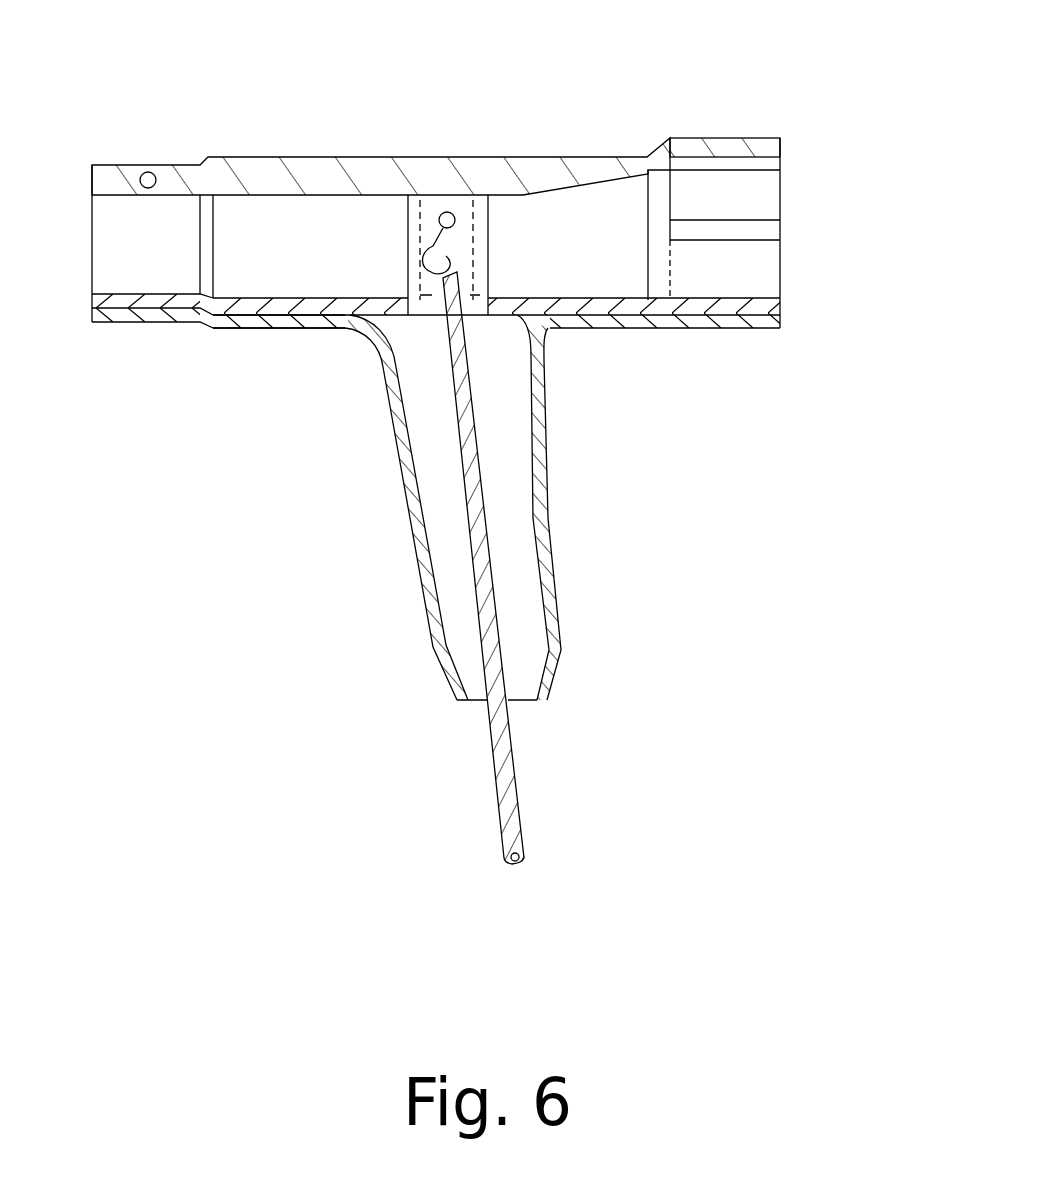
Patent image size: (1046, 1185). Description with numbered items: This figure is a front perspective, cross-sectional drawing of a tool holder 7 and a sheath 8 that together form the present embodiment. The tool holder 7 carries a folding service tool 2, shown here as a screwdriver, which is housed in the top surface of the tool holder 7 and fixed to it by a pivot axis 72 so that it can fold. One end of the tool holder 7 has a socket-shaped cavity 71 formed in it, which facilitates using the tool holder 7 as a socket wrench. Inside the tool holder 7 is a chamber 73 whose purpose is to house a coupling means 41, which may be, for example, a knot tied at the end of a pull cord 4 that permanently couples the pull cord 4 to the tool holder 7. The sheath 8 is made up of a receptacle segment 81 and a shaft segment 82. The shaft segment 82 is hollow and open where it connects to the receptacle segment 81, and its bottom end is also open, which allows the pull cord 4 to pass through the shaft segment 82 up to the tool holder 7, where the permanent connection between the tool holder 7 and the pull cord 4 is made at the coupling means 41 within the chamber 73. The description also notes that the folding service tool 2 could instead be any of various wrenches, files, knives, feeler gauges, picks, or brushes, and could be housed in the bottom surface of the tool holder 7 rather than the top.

The folding service tool 2 is at (473, 160).
The tool holder 7 is at (617, 210).
The socket-shaped cavity 71 is at (757, 203).
The pivot axis 72 is at (148, 167).
The chamber 73 is at (425, 205).
The pull cord 4 is at (512, 782).
The coupling means 41 is at (458, 258).
The sheath 8 is at (388, 507).
The receptacle segment 81 is at (283, 327).
The shaft segment 82 is at (430, 617).